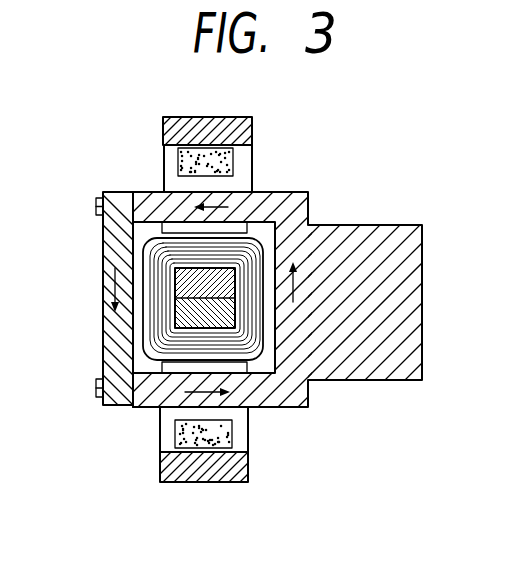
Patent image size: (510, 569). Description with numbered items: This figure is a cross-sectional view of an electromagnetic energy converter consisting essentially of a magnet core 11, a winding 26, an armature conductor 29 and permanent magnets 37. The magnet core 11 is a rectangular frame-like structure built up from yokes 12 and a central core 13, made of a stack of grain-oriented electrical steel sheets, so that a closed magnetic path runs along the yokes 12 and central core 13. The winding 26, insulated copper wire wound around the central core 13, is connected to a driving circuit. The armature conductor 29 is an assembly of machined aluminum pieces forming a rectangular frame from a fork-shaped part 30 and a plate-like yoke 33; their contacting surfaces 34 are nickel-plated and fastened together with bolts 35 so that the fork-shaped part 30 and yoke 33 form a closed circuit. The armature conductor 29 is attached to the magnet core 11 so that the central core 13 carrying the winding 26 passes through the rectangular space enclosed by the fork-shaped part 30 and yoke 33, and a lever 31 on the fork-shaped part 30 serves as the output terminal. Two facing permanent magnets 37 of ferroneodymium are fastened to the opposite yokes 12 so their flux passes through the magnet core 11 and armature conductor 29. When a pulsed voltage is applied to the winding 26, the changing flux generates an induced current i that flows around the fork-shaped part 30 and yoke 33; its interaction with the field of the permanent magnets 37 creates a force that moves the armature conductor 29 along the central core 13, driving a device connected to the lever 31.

The magnet core 11 is at (257, 110).
The yokes 12 is at (170, 135).
The central core 13 is at (182, 313).
The winding 26 is at (162, 243).
The armature conductor 29 is at (298, 184).
The fork-shaped part 30 is at (300, 204).
The lever 31 is at (378, 232).
The plate-like yoke 33 is at (108, 250).
The contacting surfaces 34 is at (136, 400).
The bolts 35 is at (100, 206).
The permanent magnets 37 is at (230, 158).
The induced current i is at (252, 186).